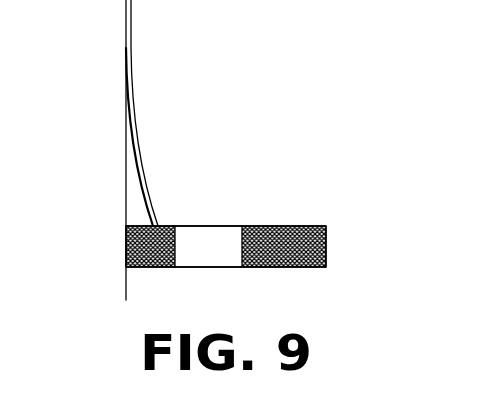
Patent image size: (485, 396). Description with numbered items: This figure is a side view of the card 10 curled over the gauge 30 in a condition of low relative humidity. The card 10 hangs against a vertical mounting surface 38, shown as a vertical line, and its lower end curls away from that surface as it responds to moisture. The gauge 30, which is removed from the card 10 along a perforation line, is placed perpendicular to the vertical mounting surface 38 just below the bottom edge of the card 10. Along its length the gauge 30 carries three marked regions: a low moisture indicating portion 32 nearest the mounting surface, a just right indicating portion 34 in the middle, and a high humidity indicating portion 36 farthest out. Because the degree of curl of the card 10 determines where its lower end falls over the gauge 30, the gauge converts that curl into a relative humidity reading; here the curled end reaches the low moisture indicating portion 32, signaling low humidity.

The card 10 is at (138, 135).
The gauge 30 is at (326, 248).
The low moisture indicating portion 32 is at (163, 226).
The just right indicating portion 34 is at (217, 226).
The high humidity indicating portion 36 is at (303, 226).
The vertical mounting surface 38 is at (126, 206).